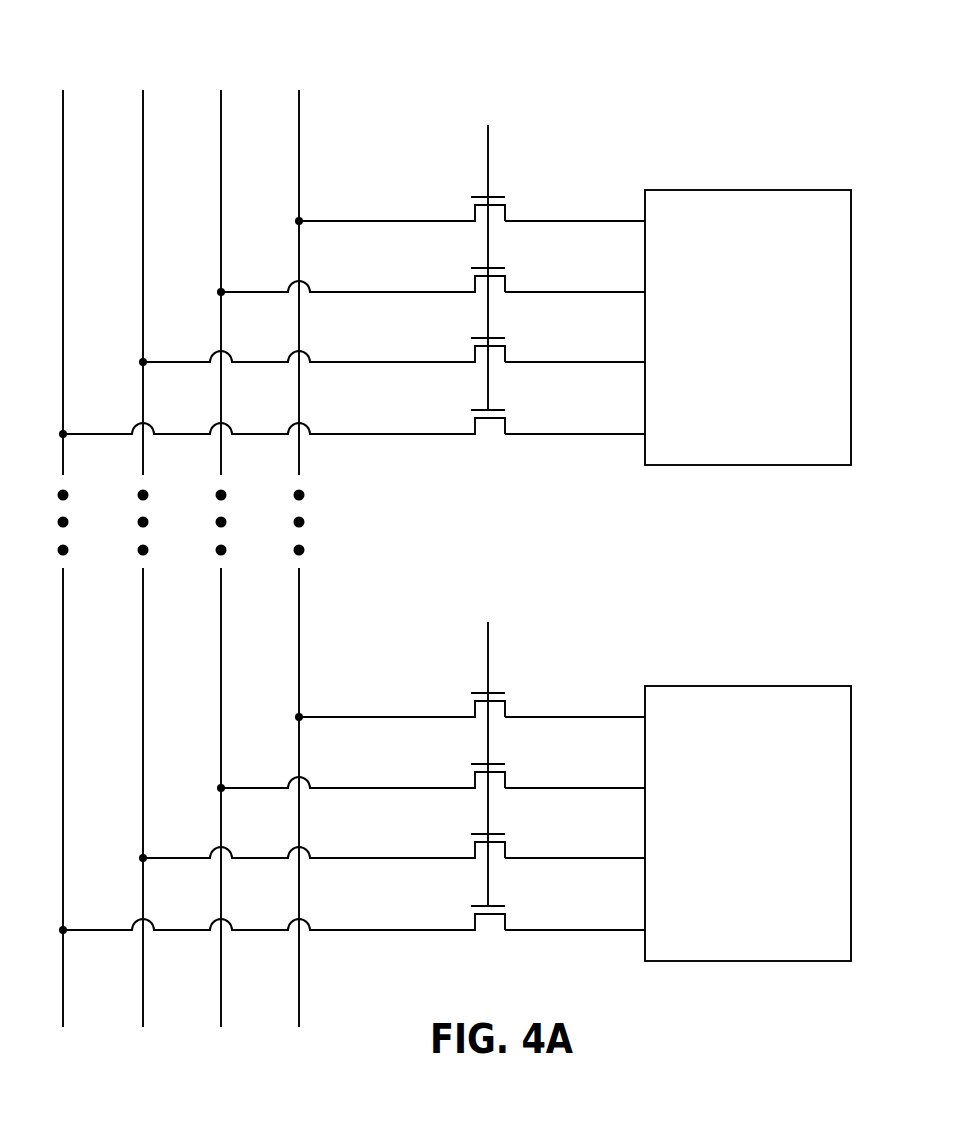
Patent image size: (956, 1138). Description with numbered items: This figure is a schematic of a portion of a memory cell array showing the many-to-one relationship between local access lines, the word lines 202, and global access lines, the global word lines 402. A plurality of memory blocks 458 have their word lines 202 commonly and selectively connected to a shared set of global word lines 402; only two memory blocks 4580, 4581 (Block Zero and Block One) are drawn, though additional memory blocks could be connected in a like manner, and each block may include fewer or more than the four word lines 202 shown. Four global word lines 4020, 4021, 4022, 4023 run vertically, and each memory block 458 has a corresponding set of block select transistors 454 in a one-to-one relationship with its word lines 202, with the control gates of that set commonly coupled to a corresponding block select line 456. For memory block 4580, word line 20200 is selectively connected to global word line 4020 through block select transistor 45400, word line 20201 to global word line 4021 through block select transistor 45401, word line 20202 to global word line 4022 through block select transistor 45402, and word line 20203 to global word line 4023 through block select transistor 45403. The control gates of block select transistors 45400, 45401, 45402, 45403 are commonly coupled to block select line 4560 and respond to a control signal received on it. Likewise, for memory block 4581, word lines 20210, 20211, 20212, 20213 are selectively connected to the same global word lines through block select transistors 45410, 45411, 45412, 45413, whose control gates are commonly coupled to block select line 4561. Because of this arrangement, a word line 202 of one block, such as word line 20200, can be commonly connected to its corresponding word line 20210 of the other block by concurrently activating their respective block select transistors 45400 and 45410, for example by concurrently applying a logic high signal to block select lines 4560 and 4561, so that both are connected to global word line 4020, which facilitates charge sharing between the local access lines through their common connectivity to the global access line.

The global word line 402 is at (180, 561).
The global word line 4020 is at (298, 1040).
The global word line 4021 is at (221, 79).
The global word line 4022 is at (142, 1040).
The global word line 4023 is at (63, 79).
The block select transistor 454 is at (282, 556).
The block select transistor 45400 is at (475, 216).
The block select transistor 45401 is at (475, 287).
The block select transistor 45402 is at (475, 357).
The block select transistor 45403 is at (475, 429).
The block select transistor 45410 is at (475, 712).
The block select transistor 45411 is at (475, 783).
The block select transistor 45412 is at (475, 853).
The block select transistor 45413 is at (475, 925).
The block select line 456 is at (531, 510).
The block select line 4560 is at (490, 150).
The block select line 4561 is at (490, 646).
The word line 202 is at (575, 546).
The word line 20200 is at (530, 220).
The word line 20201 is at (530, 291).
The word line 20202 is at (530, 361).
The word line 20203 is at (530, 433).
The word line 20210 is at (530, 716).
The word line 20211 is at (530, 787).
The word line 20212 is at (530, 857).
The word line 20213 is at (530, 929).
The memory block 458 is at (748, 575).
The memory block 4580 is at (748, 327).
The memory block 4581 is at (748, 823).